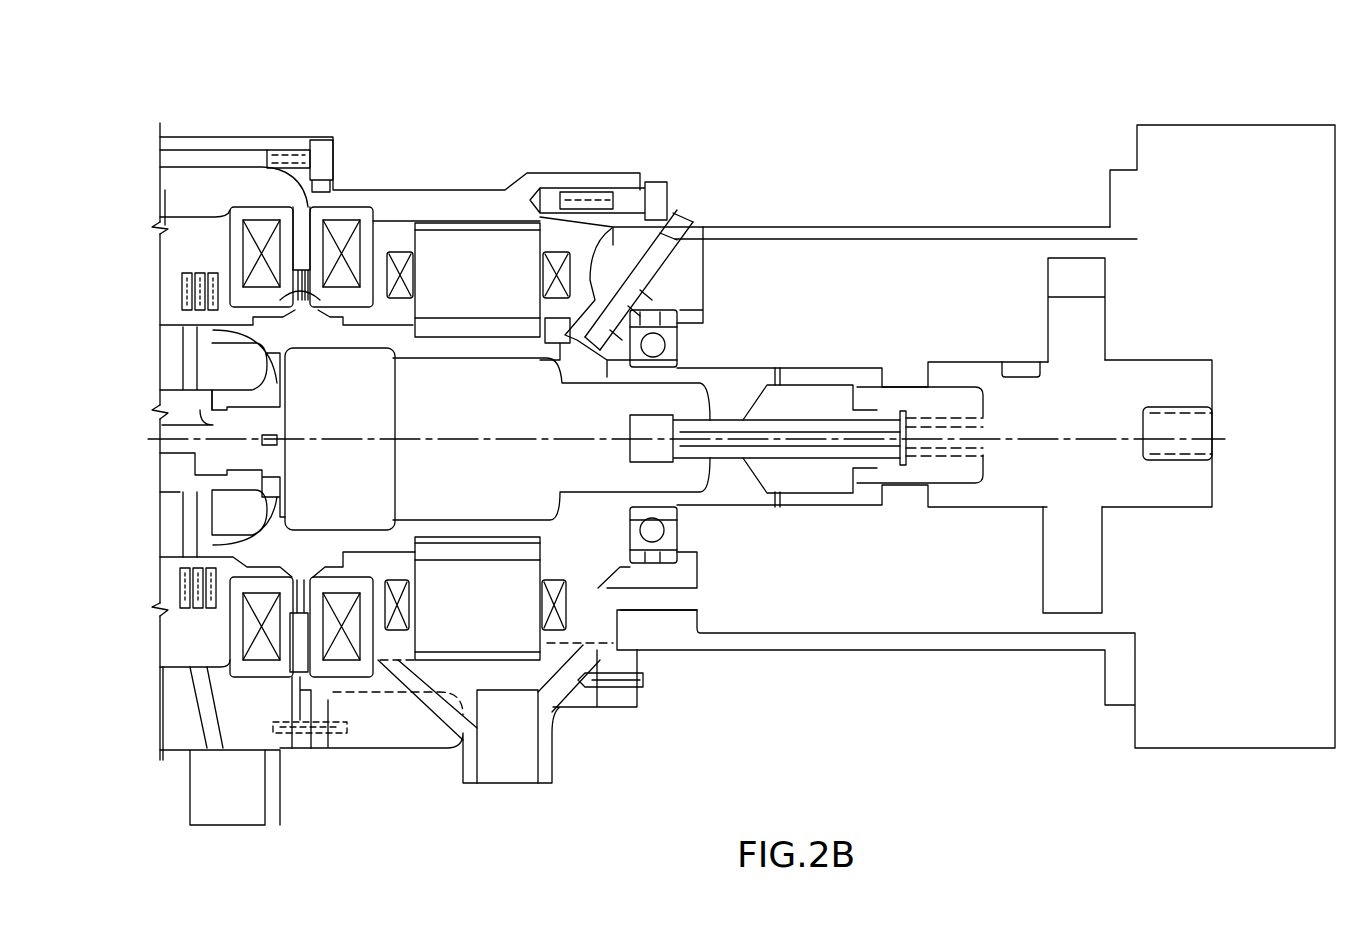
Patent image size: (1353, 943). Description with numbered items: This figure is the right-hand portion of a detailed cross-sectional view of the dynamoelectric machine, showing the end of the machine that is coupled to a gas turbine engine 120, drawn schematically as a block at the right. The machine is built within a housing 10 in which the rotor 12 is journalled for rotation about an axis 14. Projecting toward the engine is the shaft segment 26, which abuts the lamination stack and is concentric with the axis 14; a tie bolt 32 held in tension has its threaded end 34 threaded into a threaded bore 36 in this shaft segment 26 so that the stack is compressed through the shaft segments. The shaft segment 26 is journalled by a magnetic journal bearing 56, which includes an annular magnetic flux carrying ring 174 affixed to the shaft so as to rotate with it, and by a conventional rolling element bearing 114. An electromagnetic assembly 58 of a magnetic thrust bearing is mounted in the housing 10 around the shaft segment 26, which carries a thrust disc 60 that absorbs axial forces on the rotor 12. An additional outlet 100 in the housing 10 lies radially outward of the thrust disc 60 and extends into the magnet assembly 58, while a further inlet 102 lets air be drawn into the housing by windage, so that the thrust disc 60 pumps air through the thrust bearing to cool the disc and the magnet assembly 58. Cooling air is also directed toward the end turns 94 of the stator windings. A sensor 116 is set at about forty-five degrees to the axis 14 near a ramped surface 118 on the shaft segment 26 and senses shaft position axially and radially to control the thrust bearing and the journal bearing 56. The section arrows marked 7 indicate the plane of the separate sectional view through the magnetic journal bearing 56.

The housing 10 is at (175, 126).
The additional outlet 100 is at (272, 165).
The electromagnetic assembly 58 is at (350, 203).
The thrust disc 60 is at (305, 272).
The shaft segment 26 is at (157, 330).
The tie bolt 32 is at (155, 423).
The threaded bore 36 is at (215, 452).
The end turns 94 is at (163, 580).
The threaded end 34 is at (285, 498).
The magnetic journal bearing 56 is at (490, 216).
The magnetic flux carrying ring 174 is at (455, 330).
The sensor 116 is at (618, 240).
The ramped surface 118 is at (605, 352).
The rolling element bearing 114 is at (668, 323).
The rotor 12 is at (762, 369).
The further inlet 102 is at (1074, 435).
The axis 14 is at (1122, 437).
The gas turbine engine 120 is at (1207, 748).
The section line 7 is at (515, 117).